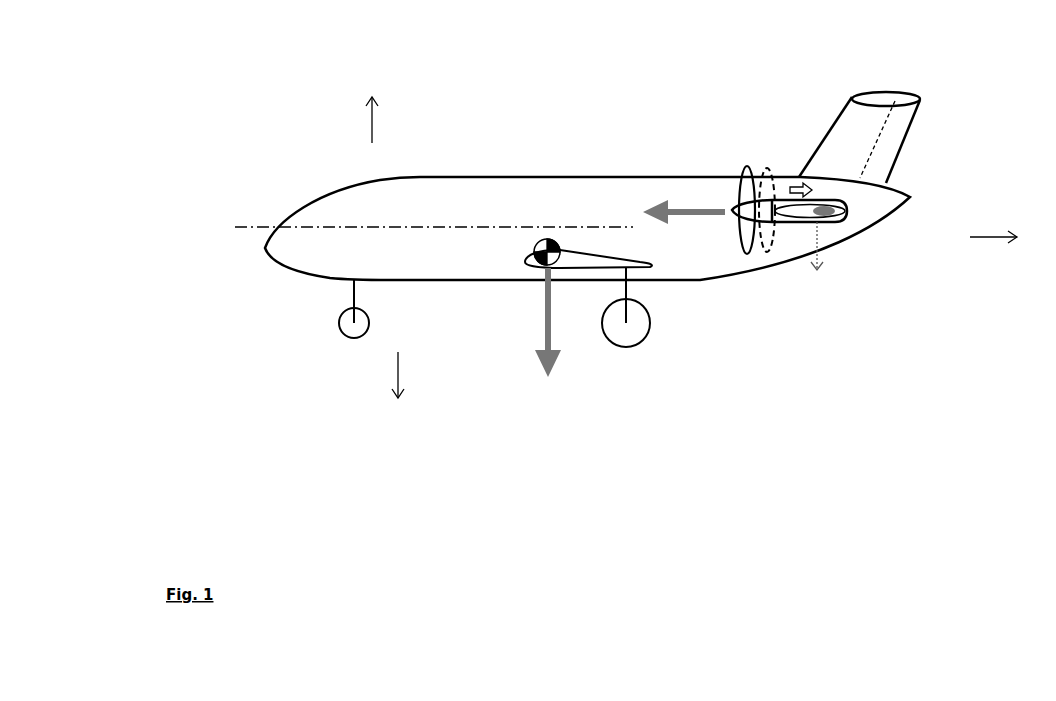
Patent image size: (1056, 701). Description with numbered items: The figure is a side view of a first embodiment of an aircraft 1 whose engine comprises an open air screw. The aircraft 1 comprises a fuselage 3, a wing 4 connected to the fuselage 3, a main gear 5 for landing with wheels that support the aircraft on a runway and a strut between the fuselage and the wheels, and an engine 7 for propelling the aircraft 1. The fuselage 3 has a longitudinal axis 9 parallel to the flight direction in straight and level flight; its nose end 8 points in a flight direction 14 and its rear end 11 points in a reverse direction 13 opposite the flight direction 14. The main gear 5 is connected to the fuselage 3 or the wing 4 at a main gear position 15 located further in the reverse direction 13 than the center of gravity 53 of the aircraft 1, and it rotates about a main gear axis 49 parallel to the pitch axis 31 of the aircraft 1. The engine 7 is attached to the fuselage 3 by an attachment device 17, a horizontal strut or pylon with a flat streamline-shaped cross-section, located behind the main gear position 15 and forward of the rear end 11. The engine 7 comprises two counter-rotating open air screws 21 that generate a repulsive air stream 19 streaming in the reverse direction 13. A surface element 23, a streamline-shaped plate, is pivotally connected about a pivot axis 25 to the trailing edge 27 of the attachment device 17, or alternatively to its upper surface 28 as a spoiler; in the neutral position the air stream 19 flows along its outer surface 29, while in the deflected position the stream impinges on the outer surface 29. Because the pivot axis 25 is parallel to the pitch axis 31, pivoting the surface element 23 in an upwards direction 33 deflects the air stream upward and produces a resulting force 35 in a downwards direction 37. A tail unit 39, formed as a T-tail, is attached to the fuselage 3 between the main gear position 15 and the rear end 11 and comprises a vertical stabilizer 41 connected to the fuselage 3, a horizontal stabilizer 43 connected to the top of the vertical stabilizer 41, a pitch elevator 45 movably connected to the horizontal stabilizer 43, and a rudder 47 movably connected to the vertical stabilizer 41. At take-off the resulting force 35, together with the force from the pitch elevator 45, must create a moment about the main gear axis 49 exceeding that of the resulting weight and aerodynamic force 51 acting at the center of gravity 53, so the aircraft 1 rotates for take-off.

The aircraft 1 is at (295, 102).
The fuselage 3 is at (435, 213).
The wing 4 is at (585, 258).
The main gear 5 is at (638, 333).
The engine 7 is at (770, 172).
The nose end 8 is at (263, 250).
The longitudinal axis 9 is at (251, 227).
The rear end 11 is at (912, 199).
The reverse direction 13 is at (990, 237).
The flight direction 14 is at (678, 208).
The main gear position 15 is at (632, 282).
The attachment device 17 is at (795, 213).
The repulsive air stream 19 is at (797, 184).
The open air screw 21 is at (768, 170).
The surface element 23 is at (833, 213).
The pivot axis 25 is at (823, 213).
The trailing edge 27 is at (812, 208).
The upper surface 28 is at (783, 205).
The outer surface 29 is at (830, 200).
The pitch axis 31 is at (545, 246).
The upwards direction 33 is at (373, 120).
The resulting force 35 is at (822, 216).
The downwards direction 37 is at (393, 375).
The tail unit 39 is at (857, 120).
The vertical stabilizer 41 is at (845, 133).
The horizontal stabilizer 43 is at (880, 100).
The pitch elevator 45 is at (912, 100).
The rudder 47 is at (885, 148).
The main gear axis 49 is at (625, 322).
The resulting weight and aerodynamic force 51 is at (545, 320).
The center of gravity 53 is at (553, 258).